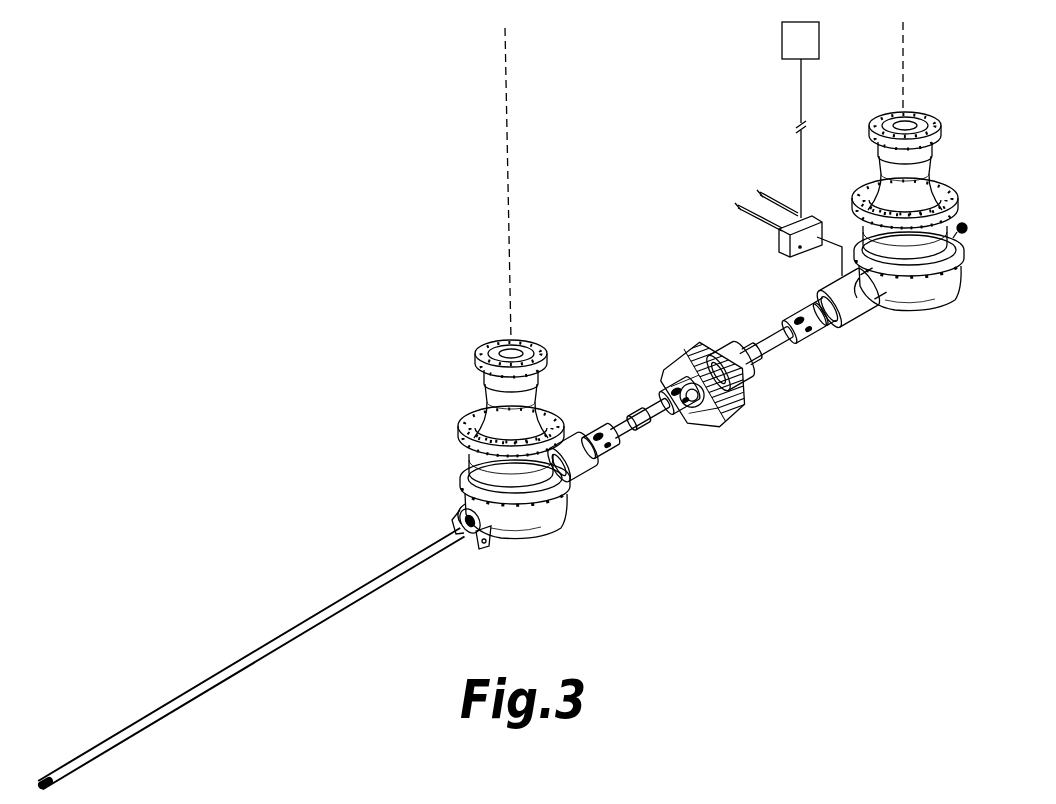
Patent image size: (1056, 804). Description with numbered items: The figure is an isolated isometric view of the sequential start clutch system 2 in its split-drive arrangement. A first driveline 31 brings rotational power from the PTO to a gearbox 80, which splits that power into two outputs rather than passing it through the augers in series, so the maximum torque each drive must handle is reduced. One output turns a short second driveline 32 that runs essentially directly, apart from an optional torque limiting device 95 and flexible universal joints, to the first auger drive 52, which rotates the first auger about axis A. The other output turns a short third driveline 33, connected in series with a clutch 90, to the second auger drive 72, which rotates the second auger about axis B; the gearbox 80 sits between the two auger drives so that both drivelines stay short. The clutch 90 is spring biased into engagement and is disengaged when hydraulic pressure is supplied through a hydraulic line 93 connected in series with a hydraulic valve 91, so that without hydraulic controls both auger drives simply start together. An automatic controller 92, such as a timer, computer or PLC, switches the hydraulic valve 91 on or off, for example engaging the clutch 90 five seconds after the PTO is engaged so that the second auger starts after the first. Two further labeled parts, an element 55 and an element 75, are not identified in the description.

The sequential start clutch system 2 is at (300, 405).
The first driveline 31 is at (240, 672).
The second driveline 32 is at (640, 440).
The third driveline 33 is at (775, 330).
The first auger drive 52 is at (562, 486).
The bearing bracket 55 is at (460, 514).
The second auger drive 72 is at (933, 283).
The sensor 75 is at (967, 228).
The gearbox 80 is at (708, 427).
The clutch 90 is at (860, 313).
The hydraulic valve 91 is at (779, 240).
The automatic controller 92 is at (782, 42).
The hydraulic line 93 is at (772, 192).
The torque limiting device 95 is at (651, 412).